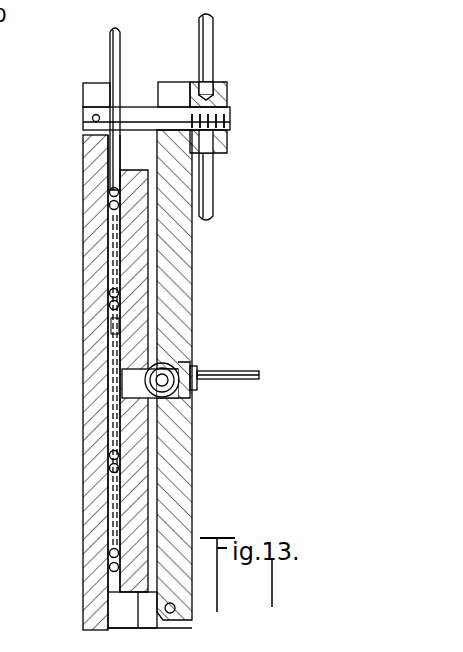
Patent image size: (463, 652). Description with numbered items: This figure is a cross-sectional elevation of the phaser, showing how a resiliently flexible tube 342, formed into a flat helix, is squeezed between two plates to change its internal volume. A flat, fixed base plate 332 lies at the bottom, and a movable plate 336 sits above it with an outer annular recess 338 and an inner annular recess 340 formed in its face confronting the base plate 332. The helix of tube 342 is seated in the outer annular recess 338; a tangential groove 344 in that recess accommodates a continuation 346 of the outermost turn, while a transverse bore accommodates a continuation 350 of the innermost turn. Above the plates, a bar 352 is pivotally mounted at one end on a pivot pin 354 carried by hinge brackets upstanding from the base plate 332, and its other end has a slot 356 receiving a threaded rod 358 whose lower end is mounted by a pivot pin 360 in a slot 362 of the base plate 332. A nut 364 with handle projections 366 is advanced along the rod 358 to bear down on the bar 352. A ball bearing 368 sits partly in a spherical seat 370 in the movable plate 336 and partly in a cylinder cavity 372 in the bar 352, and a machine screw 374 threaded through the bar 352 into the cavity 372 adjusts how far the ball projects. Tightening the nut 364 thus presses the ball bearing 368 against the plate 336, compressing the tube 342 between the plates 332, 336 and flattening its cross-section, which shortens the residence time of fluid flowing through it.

The base plate 332 is at (92, 559).
The movable plate 336 is at (133, 520).
The outer annular recess 338 is at (117, 245).
The inner annular recess 340 is at (118, 338).
The resiliently flexible tube 342 is at (110, 193).
The tangential groove 344 is at (60, 363).
The continuation of the outermost turn 346 is at (109, 42).
The continuation of the innermost turn 350 is at (258, 366).
The bar 352 is at (180, 445).
The pivot pin 354 is at (174, 611).
The slot 356 is at (170, 82).
The threaded rod 358 is at (230, 117).
The pivot pin 360 is at (92, 120).
The slot 362 is at (83, 100).
The nut 364 is at (226, 92).
The handle projections 366 is at (218, 182).
The ball bearing 368 is at (177, 362).
The spherical seat 370 is at (146, 391).
The cylinder cavity 372 is at (185, 402).
The machine screw 374 is at (199, 387).